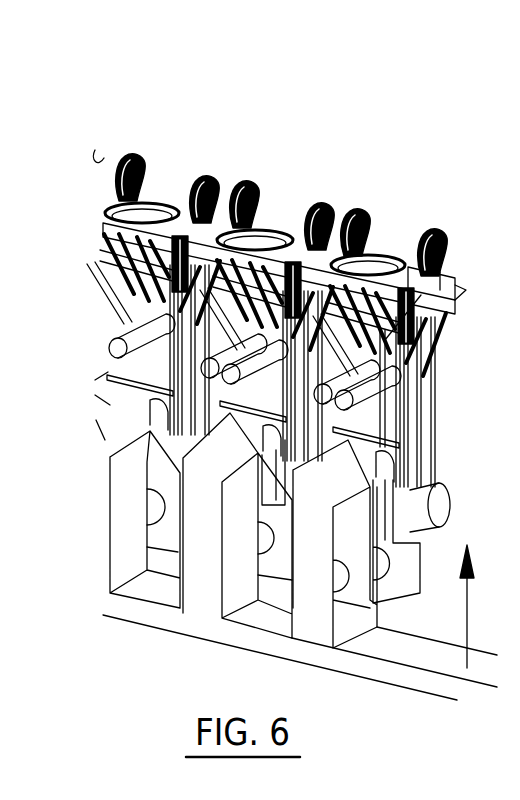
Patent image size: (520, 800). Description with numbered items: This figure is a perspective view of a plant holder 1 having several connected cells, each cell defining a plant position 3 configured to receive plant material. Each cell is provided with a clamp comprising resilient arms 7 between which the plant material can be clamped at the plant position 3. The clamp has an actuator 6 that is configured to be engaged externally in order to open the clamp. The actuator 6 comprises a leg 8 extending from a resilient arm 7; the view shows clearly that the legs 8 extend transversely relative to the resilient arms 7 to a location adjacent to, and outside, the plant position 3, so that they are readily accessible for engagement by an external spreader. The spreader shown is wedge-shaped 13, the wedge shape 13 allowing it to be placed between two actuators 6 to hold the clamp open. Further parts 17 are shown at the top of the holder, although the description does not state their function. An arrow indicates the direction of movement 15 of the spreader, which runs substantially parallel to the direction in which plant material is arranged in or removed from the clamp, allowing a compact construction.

The plant holder 1 is at (222, 100).
The plant position 3 is at (383, 205).
The gripper fingers 17 is at (363, 212).
The resilient arm 7 is at (360, 352).
The actuator 6 is at (340, 437).
The leg 8 is at (290, 369).
The wedge shape 13 is at (132, 440).
The direction of movement 15 is at (468, 615).